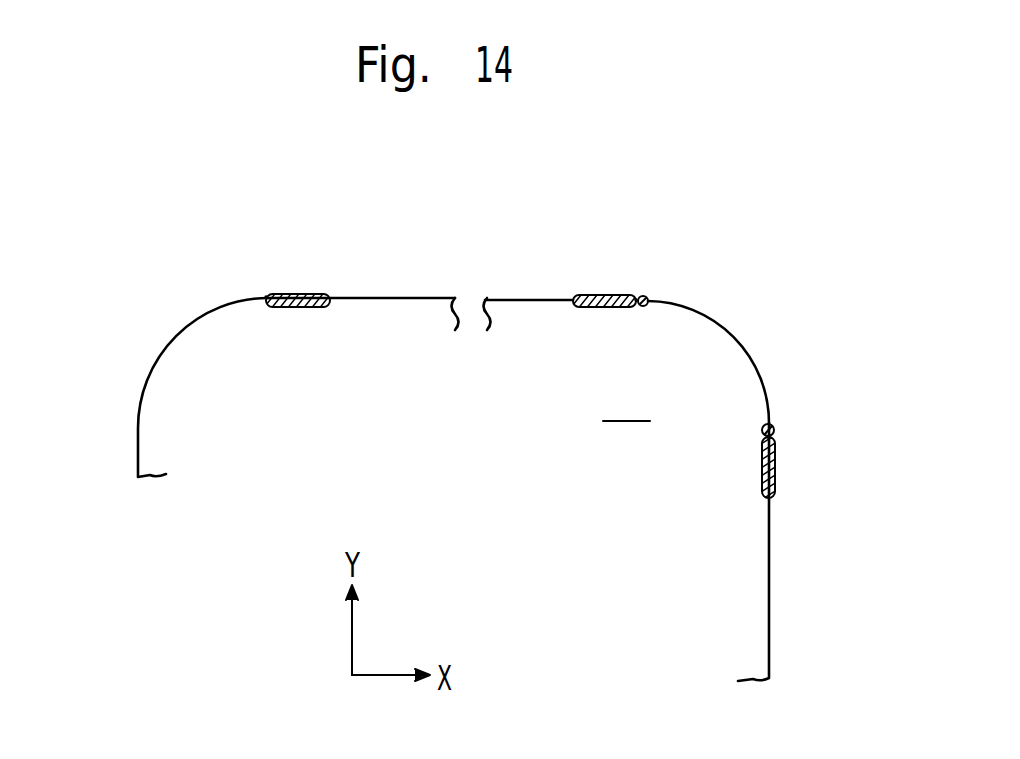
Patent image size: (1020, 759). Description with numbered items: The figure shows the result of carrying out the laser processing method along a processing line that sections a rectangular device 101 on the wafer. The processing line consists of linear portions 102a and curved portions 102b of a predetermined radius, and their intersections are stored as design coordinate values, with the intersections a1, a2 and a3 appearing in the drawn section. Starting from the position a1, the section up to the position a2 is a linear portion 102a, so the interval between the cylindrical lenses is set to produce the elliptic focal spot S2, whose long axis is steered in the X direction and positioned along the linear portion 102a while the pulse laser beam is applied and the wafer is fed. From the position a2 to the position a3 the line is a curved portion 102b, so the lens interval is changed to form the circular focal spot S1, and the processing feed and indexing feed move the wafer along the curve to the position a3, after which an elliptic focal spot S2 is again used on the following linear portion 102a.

The device 101 is at (626, 402).
The linear portion 102a is at (396, 296).
The curved portion 102b is at (175, 340).
The circular focal spot S1 is at (648, 297).
The elliptic focal spot S2 is at (303, 293).
The intersection a1 is at (266, 293).
The intersection a2 is at (634, 296).
The intersection a3 is at (777, 440).